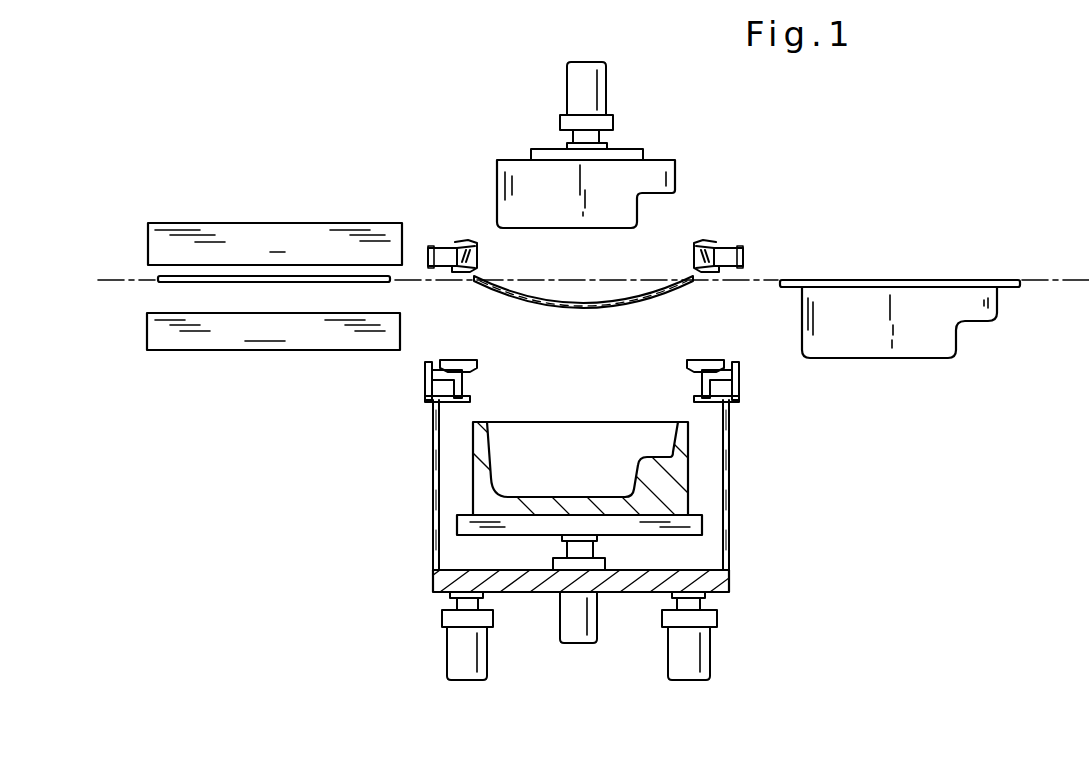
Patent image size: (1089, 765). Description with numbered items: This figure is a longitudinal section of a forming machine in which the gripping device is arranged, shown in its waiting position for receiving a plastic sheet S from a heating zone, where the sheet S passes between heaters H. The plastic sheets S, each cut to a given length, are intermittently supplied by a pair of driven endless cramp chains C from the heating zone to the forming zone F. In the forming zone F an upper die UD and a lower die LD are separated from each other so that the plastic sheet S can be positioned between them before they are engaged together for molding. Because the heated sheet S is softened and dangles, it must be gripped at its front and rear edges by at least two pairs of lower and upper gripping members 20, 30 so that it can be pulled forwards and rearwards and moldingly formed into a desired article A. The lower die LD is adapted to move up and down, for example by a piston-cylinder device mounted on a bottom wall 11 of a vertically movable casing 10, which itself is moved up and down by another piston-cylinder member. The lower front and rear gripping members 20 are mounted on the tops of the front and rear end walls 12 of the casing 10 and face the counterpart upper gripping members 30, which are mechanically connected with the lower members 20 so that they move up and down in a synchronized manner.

The vertically movable casing 10 is at (584, 516).
The bottom wall 11 is at (530, 583).
The front and rear end walls 12 is at (432, 507).
The lower gripping members 20 is at (417, 372).
The upper gripping members 30 is at (457, 239).
The endless cramp chains C is at (114, 281).
The forming zone F is at (586, 85).
The upper die UD is at (659, 160).
The lower die LD is at (675, 477).
The heaters H is at (274, 270).
The plastic sheet S is at (242, 283).
The article A is at (952, 342).